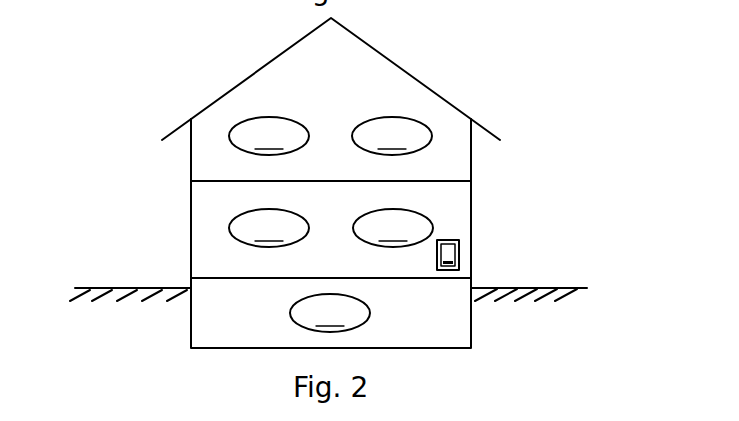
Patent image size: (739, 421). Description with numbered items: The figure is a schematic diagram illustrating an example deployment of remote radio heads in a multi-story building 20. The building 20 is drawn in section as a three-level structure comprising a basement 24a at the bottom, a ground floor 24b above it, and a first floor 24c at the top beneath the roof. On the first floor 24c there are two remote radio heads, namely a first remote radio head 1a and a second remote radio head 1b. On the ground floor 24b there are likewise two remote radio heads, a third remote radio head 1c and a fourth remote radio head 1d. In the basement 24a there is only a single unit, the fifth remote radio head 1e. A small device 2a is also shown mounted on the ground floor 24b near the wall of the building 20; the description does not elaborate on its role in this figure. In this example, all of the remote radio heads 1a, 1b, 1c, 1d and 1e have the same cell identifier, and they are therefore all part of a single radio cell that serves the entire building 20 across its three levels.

The multi-story building 20 is at (191, 167).
The basement 24a is at (455, 335).
The ground floor 24b is at (458, 207).
The first floor 24c is at (462, 158).
The first remote radio head 1a is at (269, 136).
The second remote radio head 1b is at (392, 136).
The third remote radio head 1c is at (269, 228).
The fourth remote radio head 1d is at (393, 228).
The fifth remote radio head 1e is at (330, 313).
The control device 2a is at (460, 252).